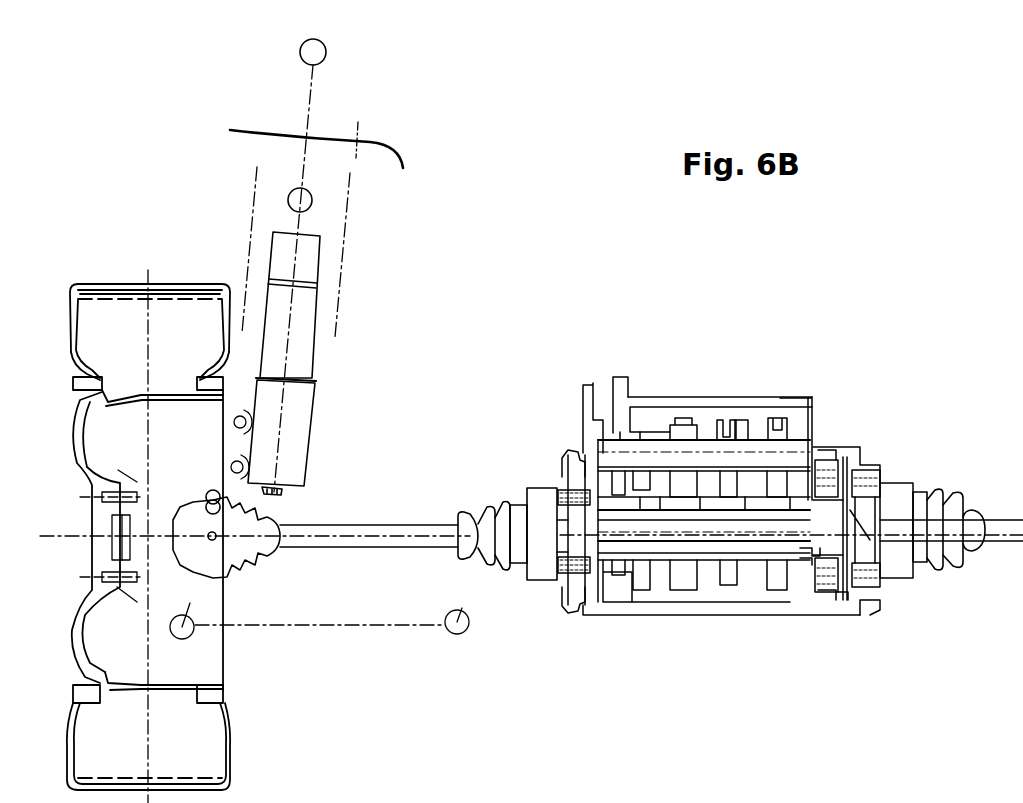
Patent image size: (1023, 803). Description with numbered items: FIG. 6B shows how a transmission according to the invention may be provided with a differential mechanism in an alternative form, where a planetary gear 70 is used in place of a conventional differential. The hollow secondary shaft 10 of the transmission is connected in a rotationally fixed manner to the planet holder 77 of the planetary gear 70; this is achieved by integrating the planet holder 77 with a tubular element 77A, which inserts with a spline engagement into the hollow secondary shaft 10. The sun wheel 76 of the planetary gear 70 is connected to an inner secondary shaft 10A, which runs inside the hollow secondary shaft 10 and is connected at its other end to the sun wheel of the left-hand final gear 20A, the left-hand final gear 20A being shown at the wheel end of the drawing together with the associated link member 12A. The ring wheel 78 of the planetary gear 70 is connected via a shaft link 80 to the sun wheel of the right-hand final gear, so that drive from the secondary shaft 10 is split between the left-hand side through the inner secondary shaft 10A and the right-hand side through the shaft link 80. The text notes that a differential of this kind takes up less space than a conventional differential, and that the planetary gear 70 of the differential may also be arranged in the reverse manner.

The secondary shaft 10 is at (708, 526).
The inner secondary shaft 10A is at (678, 532).
The tie rod 12A is at (360, 525).
The left-hand final gear 20A is at (552, 511).
The planetary gear 70 is at (828, 465).
The sun wheel 76 is at (812, 555).
The planet holder 77 is at (809, 562).
The tubular element 77A is at (827, 463).
The ring wheel 78 is at (837, 593).
The shaft link 80 is at (887, 487).